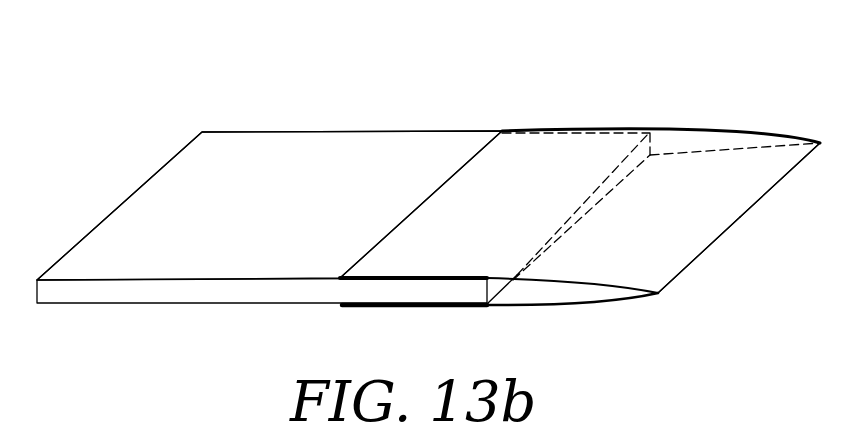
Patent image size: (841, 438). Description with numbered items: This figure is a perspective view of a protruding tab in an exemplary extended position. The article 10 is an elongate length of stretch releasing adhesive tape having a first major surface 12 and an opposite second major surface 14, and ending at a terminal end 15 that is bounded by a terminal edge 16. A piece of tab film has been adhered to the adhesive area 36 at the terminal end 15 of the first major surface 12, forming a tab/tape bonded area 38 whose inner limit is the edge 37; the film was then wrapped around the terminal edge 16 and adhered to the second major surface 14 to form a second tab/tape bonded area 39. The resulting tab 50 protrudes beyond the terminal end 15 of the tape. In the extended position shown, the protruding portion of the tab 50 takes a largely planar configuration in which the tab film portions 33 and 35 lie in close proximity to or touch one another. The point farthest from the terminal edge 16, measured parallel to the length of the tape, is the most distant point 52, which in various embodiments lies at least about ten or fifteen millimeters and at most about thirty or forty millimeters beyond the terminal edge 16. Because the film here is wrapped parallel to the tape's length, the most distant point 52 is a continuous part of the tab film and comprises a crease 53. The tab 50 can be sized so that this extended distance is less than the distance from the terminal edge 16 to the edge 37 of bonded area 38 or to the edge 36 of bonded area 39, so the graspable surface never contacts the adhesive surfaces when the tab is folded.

The article 10 is at (212, 82).
The first major surface 12 is at (132, 303).
The second major surface 14 is at (135, 228).
The terminal end 15 is at (633, 98).
The terminal edge 16 is at (578, 200).
The tab film portion 33 is at (580, 280).
The tab film portion 35 is at (577, 306).
The adhesive area 36 is at (370, 248).
The edge of tab/tape bonded area 37 is at (342, 307).
The tab/tape bonded area 38 is at (420, 308).
The tab/tape bonded area 39 is at (562, 130).
The tab 50 is at (733, 90).
The most distant point 52 is at (752, 205).
The crease 53 is at (712, 247).